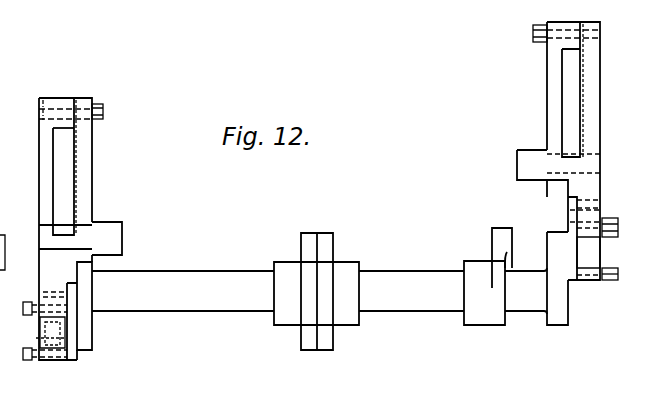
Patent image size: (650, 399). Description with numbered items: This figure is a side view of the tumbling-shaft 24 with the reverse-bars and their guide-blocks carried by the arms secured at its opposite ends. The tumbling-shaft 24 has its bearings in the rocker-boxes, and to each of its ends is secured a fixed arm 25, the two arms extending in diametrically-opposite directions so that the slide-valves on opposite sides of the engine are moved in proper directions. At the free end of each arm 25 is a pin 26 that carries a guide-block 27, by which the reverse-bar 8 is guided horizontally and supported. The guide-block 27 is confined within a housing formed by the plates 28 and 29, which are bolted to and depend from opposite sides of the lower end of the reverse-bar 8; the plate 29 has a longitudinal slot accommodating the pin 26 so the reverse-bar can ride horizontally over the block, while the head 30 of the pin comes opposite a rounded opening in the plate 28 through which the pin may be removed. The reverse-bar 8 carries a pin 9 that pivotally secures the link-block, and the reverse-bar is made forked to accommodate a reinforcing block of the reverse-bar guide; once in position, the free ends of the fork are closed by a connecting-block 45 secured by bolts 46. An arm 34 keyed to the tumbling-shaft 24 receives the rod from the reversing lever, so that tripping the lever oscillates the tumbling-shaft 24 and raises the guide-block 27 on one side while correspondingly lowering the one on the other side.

The reverse-bar 8 is at (97, 168).
The pin 9 is at (122, 240).
The tumbling-shaft 24 is at (196, 271).
The fixed arm 25 is at (92, 334).
The pin 26 is at (52, 330).
The guide-block 27 is at (619, 246).
The plate 28 is at (620, 290).
The plate 29 is at (79, 356).
The head 30 is at (38, 347).
The arm 34 is at (503, 228).
The connecting-block 45 is at (63, 110).
The bolts 46 is at (104, 116).